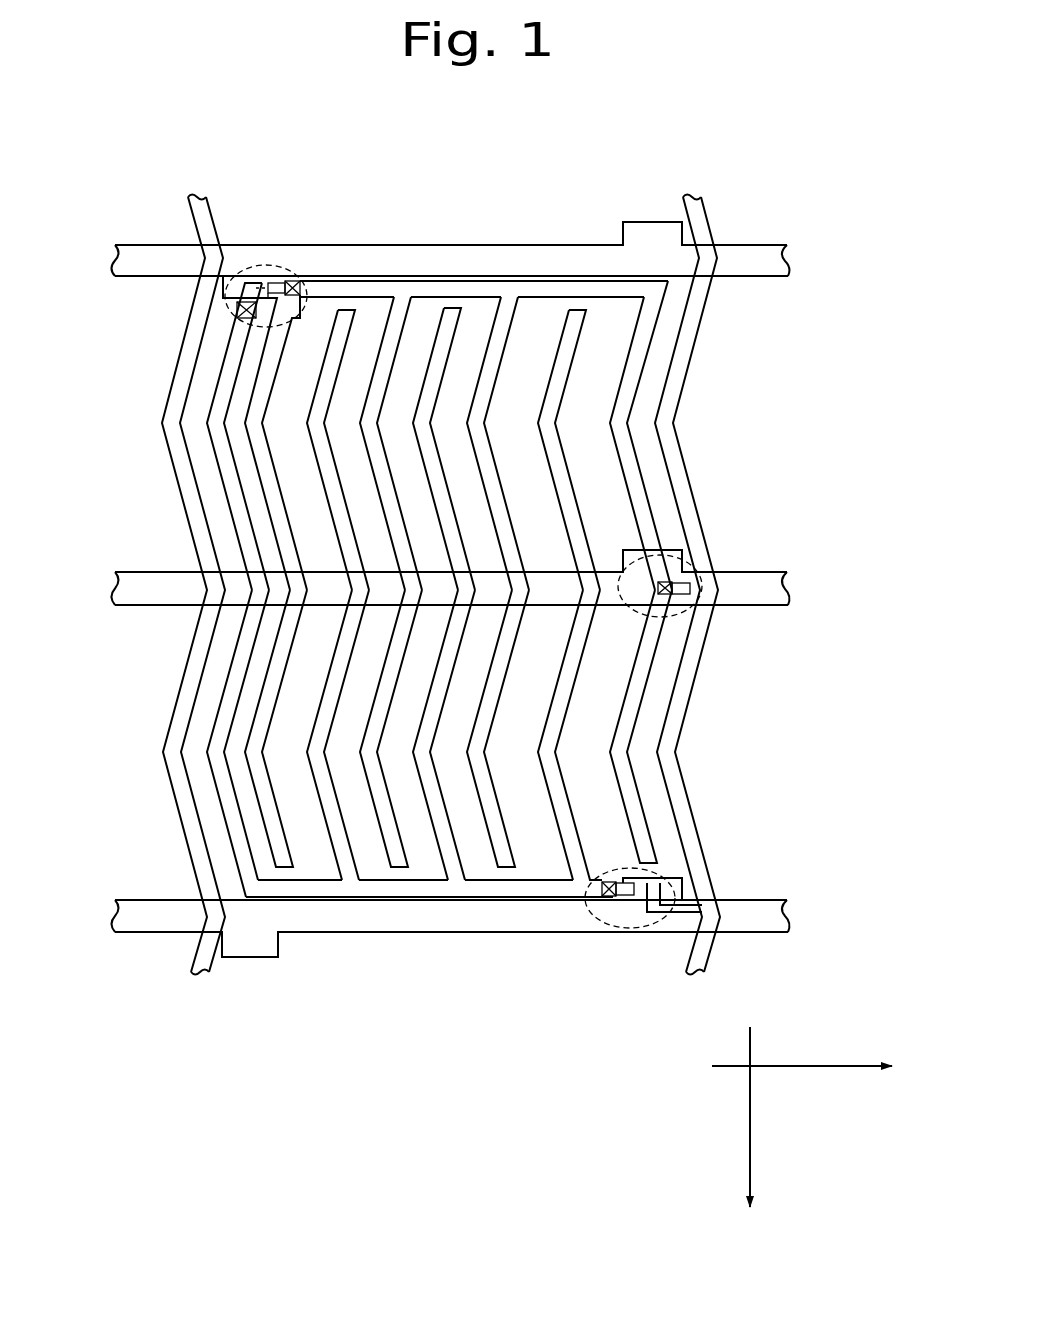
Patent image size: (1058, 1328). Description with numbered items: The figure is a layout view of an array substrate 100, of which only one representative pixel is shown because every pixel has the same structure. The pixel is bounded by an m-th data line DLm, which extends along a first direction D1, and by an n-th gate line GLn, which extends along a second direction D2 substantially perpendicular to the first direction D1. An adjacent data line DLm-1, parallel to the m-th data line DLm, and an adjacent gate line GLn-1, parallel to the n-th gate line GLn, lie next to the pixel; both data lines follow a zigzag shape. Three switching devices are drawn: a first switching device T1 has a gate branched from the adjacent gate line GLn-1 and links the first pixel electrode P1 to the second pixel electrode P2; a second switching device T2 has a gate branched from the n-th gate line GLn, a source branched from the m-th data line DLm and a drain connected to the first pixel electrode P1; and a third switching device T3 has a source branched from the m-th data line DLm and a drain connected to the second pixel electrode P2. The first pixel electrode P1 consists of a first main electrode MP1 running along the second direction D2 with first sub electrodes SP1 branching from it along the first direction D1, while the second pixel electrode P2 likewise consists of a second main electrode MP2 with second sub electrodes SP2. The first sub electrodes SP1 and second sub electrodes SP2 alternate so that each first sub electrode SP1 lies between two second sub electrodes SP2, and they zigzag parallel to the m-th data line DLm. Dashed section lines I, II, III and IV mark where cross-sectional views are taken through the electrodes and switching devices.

The array substrate 100 is at (485, 131).
The (n-1)th gate line GLn-1 is at (786, 262).
The n-th gate line GLn is at (786, 589).
The (m-1)th data line DLm-1 is at (197, 200).
The m-th data line DLm is at (691, 200).
The first pixel electrode P1 is at (798, 326).
The first sub electrodes SP1 is at (650, 343).
The first main electrode MP1 is at (617, 297).
The second pixel electrode P2 is at (68, 792).
The second sub electrodes SP2 is at (230, 813).
The second main electrode MP2 is at (275, 878).
The first switching device T1 is at (272, 266).
The second switching device T2 is at (677, 556).
The third switching device T3 is at (612, 933).
The section line I-I' I is at (133, 477).
The section line II-II' II is at (332, 316).
The section line III-III' III is at (490, 588).
The section line IV is at (704, 938).
The first direction D1 is at (750, 1131).
The second direction D2 is at (817, 1068).